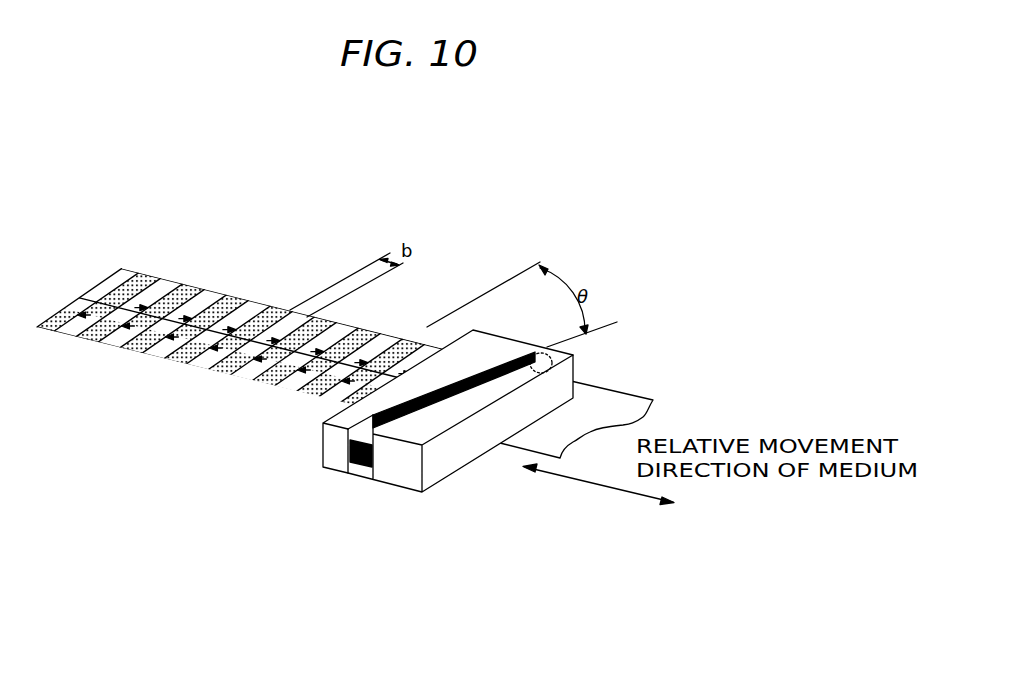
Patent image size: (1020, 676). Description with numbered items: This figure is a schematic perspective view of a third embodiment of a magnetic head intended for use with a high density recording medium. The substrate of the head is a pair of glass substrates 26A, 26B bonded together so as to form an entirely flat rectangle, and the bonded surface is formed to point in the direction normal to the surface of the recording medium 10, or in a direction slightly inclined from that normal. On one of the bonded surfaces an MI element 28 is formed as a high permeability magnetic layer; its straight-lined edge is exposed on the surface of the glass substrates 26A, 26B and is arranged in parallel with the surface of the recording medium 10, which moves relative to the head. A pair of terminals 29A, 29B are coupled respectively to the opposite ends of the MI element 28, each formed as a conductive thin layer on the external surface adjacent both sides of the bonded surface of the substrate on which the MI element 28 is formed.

The recording medium 10 is at (223, 293).
The glass substrate 26A is at (328, 436).
The glass substrate 26B is at (397, 468).
The MI element 28 is at (433, 393).
The terminal 29A is at (550, 368).
The terminal 29B is at (358, 467).